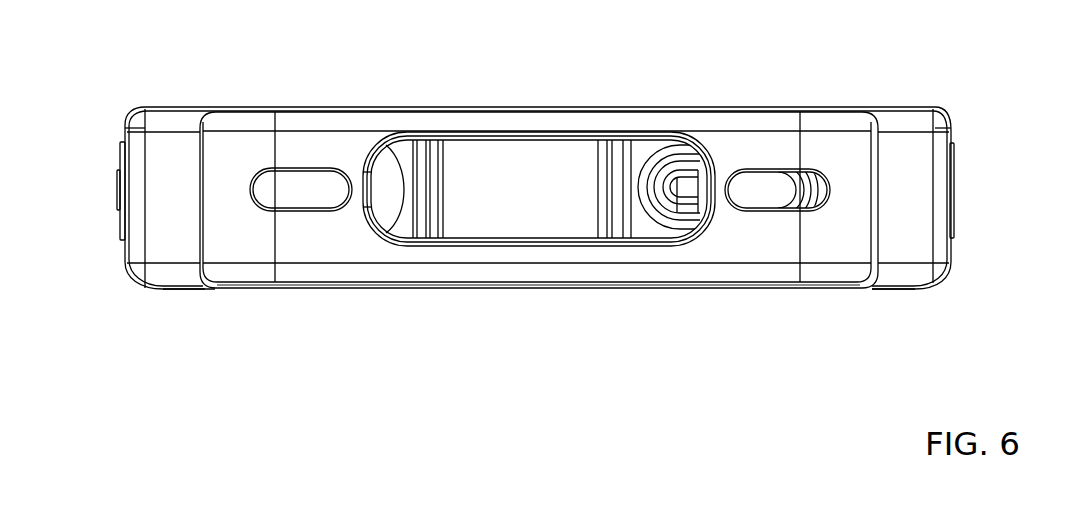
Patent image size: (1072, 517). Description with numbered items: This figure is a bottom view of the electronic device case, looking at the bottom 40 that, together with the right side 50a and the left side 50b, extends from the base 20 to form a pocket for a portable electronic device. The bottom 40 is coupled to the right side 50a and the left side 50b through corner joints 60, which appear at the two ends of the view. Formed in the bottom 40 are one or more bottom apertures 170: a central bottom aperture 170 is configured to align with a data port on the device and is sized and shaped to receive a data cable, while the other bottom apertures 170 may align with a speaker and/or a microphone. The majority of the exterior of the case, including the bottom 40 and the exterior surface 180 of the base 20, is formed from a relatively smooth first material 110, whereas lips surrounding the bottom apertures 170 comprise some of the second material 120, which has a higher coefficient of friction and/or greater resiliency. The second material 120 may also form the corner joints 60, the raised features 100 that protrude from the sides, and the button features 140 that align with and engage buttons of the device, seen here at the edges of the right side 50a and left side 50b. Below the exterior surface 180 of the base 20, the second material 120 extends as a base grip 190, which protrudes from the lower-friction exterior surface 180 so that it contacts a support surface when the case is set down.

The base 20 is at (520, 298).
The bottom 40 is at (741, 243).
The right side 50a is at (955, 133).
The left side 50b is at (124, 128).
The corner joints 60 is at (172, 163).
The raised features 100 is at (120, 152).
The first material 110 is at (333, 145).
The second material 120 is at (282, 173).
The button features 140 is at (115, 185).
The bottom apertures 170 is at (533, 182).
The exterior surface 180 is at (378, 284).
The base grip 190 is at (303, 290).